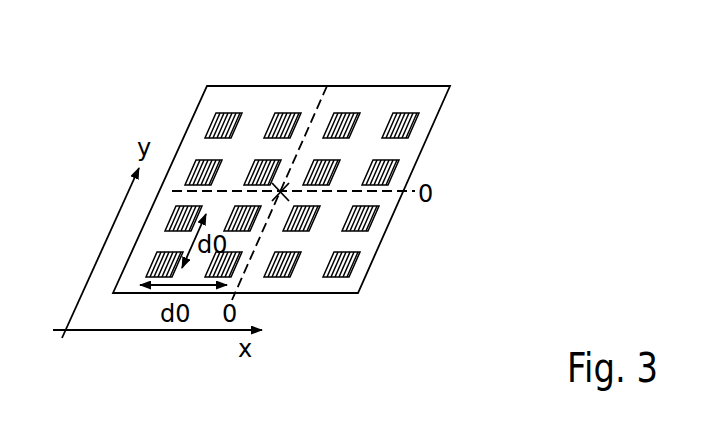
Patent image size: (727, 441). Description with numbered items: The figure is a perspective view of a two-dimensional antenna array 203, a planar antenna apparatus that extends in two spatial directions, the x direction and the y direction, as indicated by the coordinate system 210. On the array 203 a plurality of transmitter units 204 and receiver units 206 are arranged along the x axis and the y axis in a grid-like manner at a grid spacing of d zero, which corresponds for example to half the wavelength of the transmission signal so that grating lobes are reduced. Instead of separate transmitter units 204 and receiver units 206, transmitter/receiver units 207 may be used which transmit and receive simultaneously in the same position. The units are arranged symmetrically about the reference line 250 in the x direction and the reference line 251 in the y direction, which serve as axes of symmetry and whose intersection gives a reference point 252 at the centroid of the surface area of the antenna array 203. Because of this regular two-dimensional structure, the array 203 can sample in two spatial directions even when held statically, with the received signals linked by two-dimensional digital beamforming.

The two-dimensional antenna array 203 is at (422, 152).
The transmitter units 204 is at (342, 113).
The receiver units 206 is at (281, 277).
The transmitter/receiver units 207 is at (332, 156).
The coordinate system 210 is at (116, 340).
The reference line 250 is at (243, 275).
The reference line 251 is at (172, 190).
The reference point 252 is at (282, 188).